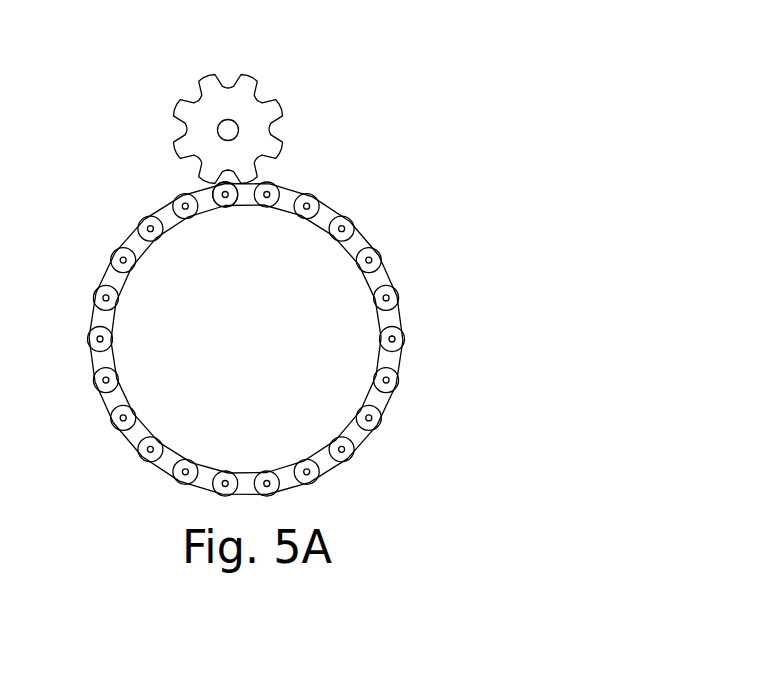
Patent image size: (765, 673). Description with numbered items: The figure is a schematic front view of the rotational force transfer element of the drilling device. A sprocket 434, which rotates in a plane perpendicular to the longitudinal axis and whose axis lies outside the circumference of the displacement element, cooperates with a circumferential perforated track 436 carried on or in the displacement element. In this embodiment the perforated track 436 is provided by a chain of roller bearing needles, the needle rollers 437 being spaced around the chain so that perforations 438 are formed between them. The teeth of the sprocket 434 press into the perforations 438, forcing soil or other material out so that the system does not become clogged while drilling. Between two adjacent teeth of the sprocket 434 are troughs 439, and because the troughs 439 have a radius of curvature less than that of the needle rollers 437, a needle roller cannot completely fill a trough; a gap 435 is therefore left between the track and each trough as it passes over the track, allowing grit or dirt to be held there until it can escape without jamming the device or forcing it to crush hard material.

The sprocket 434 is at (262, 104).
The gap 435 is at (220, 177).
The perforated track 436 is at (403, 320).
The needle rollers 437 is at (236, 200).
The perforations 438 is at (328, 212).
The troughs 439 is at (231, 174).